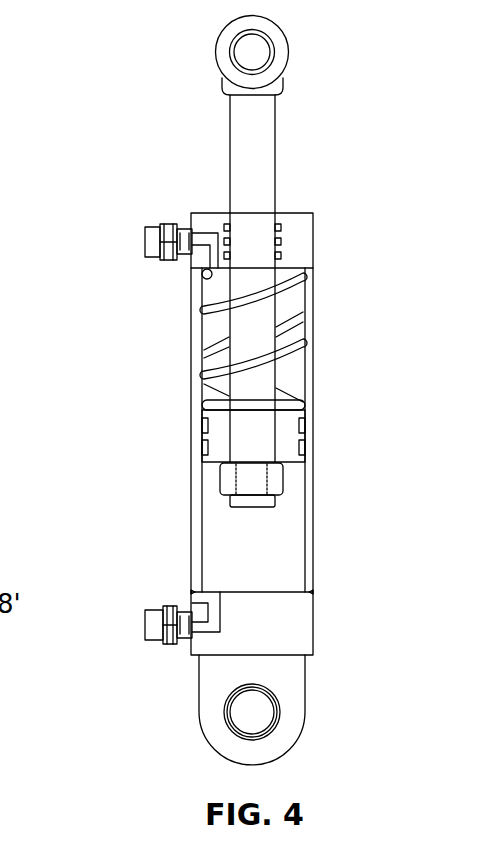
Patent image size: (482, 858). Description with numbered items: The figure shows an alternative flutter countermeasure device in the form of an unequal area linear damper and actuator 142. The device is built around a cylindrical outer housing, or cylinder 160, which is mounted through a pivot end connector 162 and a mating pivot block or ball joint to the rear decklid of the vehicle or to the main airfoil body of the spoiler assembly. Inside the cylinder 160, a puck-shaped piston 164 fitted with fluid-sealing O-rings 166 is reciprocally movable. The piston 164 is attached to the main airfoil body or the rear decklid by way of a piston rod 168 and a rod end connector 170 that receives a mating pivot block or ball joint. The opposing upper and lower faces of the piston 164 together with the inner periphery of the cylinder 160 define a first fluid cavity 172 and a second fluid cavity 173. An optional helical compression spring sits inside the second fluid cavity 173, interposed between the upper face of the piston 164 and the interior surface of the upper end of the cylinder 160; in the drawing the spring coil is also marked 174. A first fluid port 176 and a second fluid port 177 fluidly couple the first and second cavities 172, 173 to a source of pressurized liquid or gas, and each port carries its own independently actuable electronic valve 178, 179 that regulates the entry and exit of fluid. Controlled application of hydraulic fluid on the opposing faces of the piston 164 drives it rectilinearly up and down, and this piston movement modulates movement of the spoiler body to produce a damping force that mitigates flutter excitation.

The unequal area (UEA) linear damper and actuator 142 is at (140, 107).
The rod end connector 170 is at (218, 35).
The piston rod 168 is at (230, 162).
The cylindrical outer housing 160 is at (314, 240).
The electronic valve 179 is at (145, 233).
The second fluid port 177 is at (182, 256).
The second fluid cavity 173 is at (208, 357).
The spring coil 174 is at (306, 338).
The piston 164 is at (211, 404).
The fluid-sealing O-rings 166 is at (308, 424).
The first fluid cavity 172 is at (210, 478).
The first fluid port 176 is at (182, 607).
The electronic valve 178 is at (145, 620).
The pivot end connector 162 is at (198, 712).